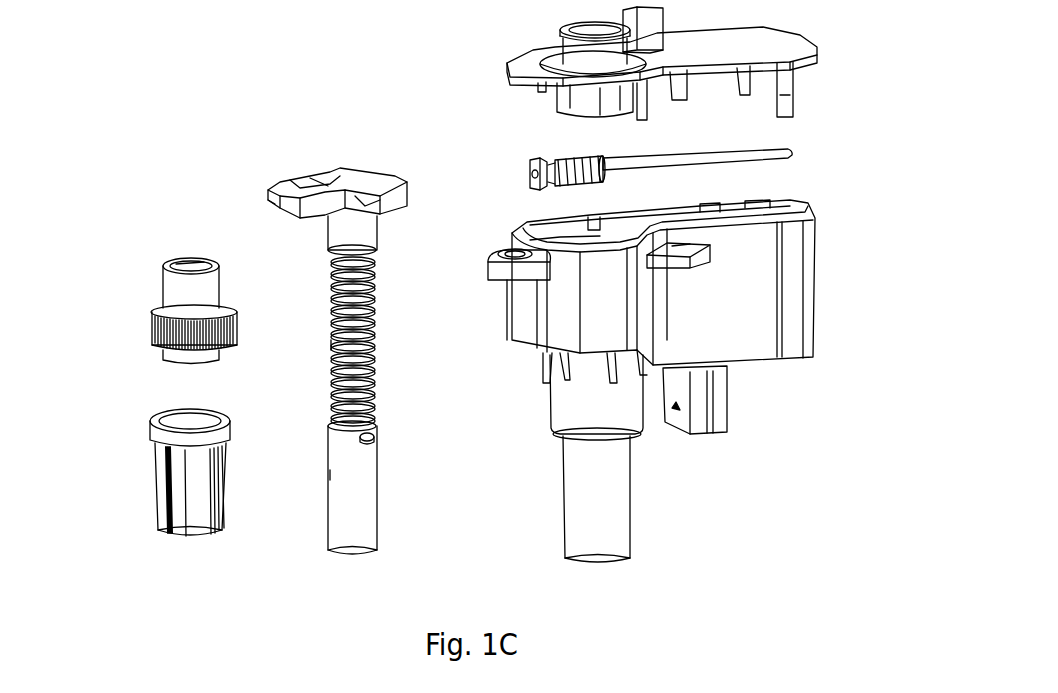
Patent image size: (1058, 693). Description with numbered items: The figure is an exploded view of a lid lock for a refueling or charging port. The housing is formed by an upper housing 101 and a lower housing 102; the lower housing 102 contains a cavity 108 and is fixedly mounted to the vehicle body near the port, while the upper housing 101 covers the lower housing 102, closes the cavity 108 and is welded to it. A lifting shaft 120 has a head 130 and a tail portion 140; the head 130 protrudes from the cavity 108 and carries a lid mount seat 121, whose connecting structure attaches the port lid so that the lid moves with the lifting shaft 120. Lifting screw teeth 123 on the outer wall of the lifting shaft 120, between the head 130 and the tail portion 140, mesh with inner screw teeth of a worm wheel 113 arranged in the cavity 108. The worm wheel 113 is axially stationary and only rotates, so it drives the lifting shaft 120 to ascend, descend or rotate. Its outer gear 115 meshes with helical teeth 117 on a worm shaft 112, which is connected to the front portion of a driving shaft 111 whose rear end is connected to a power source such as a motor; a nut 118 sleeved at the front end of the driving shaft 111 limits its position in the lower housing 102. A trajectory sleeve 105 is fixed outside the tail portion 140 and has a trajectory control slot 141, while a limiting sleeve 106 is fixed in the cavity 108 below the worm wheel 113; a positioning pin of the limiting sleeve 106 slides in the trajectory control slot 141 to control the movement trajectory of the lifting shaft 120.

The upper housing 101 is at (780, 35).
The lower housing 102 is at (808, 320).
The trajectory sleeve 105 is at (344, 474).
The limiting sleeve 106 is at (157, 482).
The cavity 108 is at (538, 220).
The driving shaft 111 is at (792, 152).
The worm shaft 112 is at (603, 158).
The worm wheel 113 is at (174, 292).
The outer gear 115 is at (155, 325).
The helical teeth 117 is at (570, 158).
The nut 118 is at (530, 170).
The lifting shaft 120 is at (374, 300).
The lid mount seat 121 is at (276, 192).
The lifting screw teeth 123 is at (340, 352).
The head 130 is at (347, 236).
The tail portion 140 is at (368, 528).
The trajectory control slot 141 is at (374, 438).